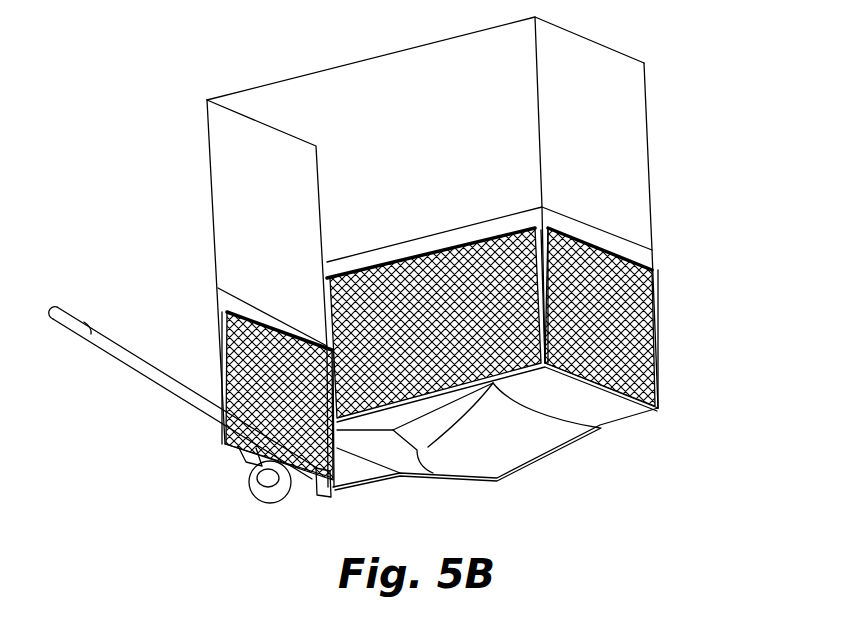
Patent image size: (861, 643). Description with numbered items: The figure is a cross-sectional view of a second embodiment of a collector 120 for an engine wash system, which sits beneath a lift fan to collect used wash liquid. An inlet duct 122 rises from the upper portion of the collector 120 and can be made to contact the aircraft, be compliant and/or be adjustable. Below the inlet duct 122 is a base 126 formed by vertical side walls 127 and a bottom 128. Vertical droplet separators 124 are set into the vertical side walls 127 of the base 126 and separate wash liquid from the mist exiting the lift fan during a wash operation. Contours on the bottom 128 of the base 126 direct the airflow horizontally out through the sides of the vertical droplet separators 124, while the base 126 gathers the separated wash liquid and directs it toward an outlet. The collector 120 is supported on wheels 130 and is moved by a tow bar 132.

The collector 120 is at (624, 26).
The inlet duct 122 is at (623, 163).
The vertical droplet separators 124 is at (637, 355).
The base 126 is at (677, 319).
The vertical side walls 127 is at (222, 300).
The bottom 128 is at (540, 475).
The wheels 130 is at (243, 477).
The tow bar 132 is at (118, 338).